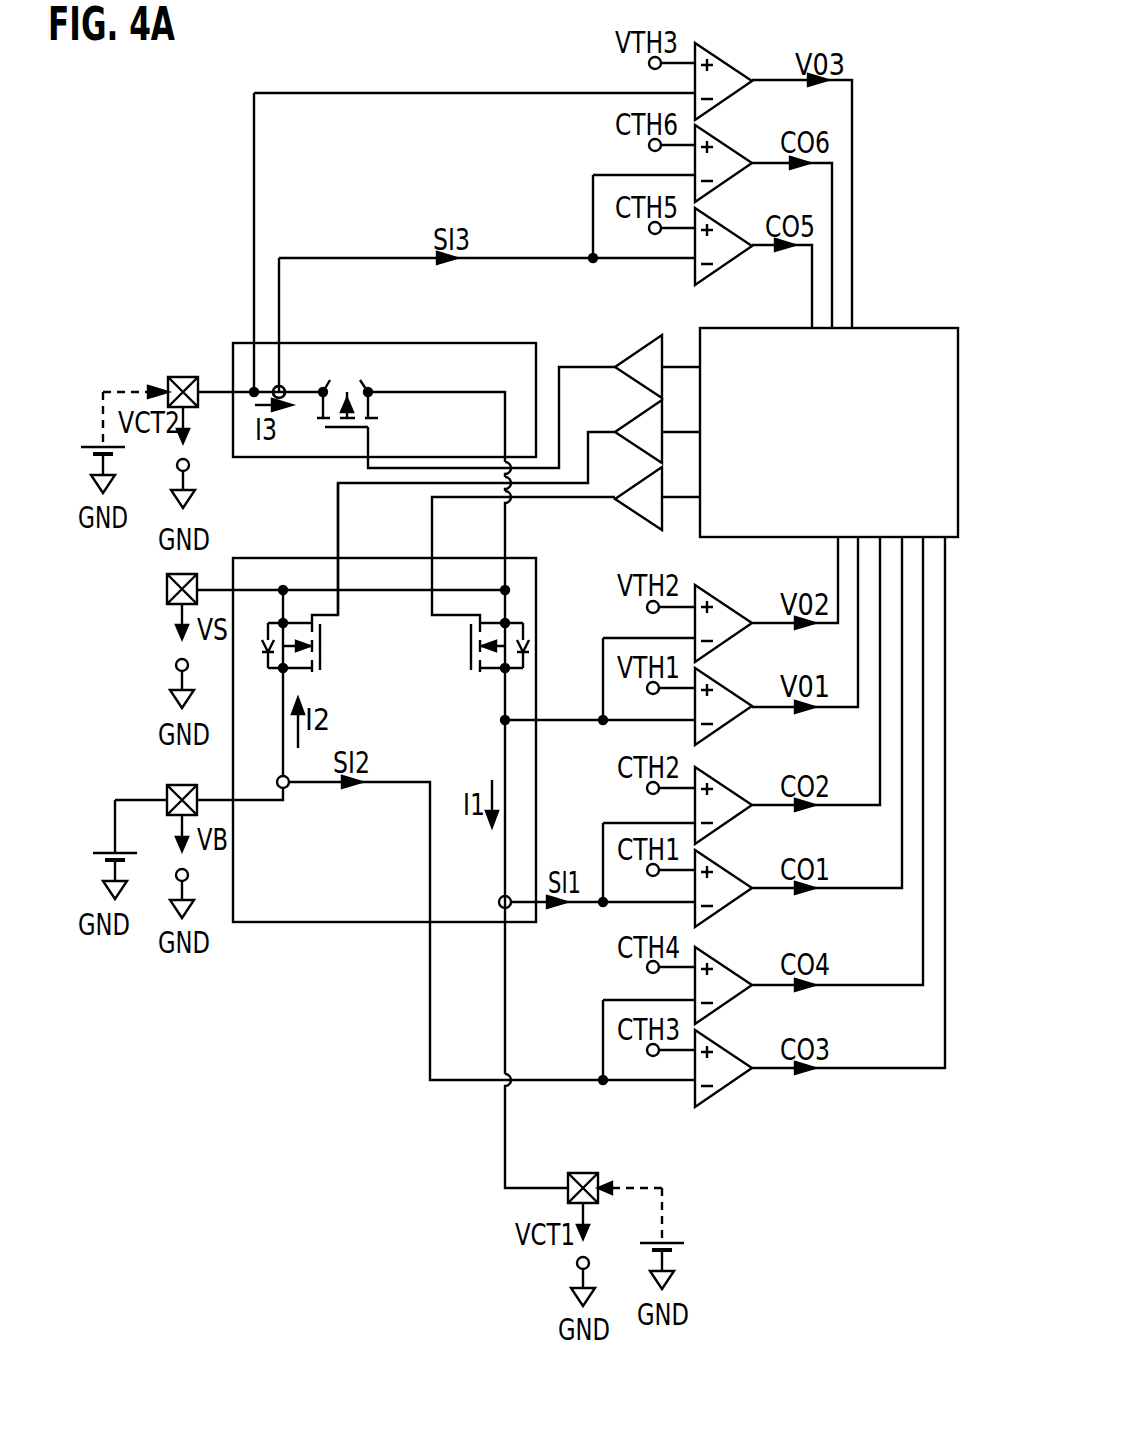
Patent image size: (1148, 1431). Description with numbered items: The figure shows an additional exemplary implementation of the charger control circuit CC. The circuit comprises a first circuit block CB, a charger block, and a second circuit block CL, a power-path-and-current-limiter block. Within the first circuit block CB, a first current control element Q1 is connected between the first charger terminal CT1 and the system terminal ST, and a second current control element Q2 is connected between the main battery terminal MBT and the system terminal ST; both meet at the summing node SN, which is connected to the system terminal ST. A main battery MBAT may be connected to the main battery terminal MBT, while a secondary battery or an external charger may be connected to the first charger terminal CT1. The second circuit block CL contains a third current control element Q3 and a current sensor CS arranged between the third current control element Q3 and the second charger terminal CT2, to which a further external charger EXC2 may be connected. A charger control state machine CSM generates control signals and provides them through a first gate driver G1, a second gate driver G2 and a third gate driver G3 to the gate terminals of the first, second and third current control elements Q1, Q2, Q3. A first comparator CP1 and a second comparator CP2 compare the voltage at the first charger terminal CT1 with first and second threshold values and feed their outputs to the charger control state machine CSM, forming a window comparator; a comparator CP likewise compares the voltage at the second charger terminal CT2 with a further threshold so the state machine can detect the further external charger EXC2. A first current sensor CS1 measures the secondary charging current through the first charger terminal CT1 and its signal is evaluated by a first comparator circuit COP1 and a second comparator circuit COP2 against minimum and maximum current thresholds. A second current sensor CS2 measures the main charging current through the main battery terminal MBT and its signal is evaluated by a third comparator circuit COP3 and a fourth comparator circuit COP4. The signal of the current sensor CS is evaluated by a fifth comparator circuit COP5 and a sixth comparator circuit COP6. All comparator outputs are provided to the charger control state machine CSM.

The charger control circuit CC is at (150, 212).
The charger control state machine CSM is at (829, 432).
The second circuit block CL is at (384, 401).
The first circuit block CB is at (384, 742).
The comparator CP is at (728, 63).
The sixth comparator circuit COP6 is at (730, 148).
The fifth comparator circuit COP5 is at (730, 231).
The second comparator CP2 is at (733, 610).
The first comparator CP1 is at (733, 693).
The second comparator circuit COP2 is at (733, 793).
The first comparator circuit COP1 is at (733, 875).
The fourth comparator circuit COP4 is at (733, 972).
The third comparator circuit COP3 is at (733, 1055).
The third gate driver G3 is at (630, 356).
The second gate driver G2 is at (630, 422).
The first gate driver G1 is at (640, 512).
The second charger terminal CT2 is at (183, 376).
The further external charger EXC2 is at (98, 444).
The current sensor CS is at (290, 380).
The third current control element Q3 is at (335, 432).
The summing node SN is at (286, 585).
The system terminal ST is at (167, 590).
The main battery terminal MBT is at (167, 792).
The main battery MBAT is at (105, 848).
The second current control element Q2 is at (328, 645).
The first current control element Q1 is at (466, 630).
The second current sensor CS2 is at (289, 787).
The first current sensor CS1 is at (500, 896).
The first charger terminal CT1 is at (584, 1171).